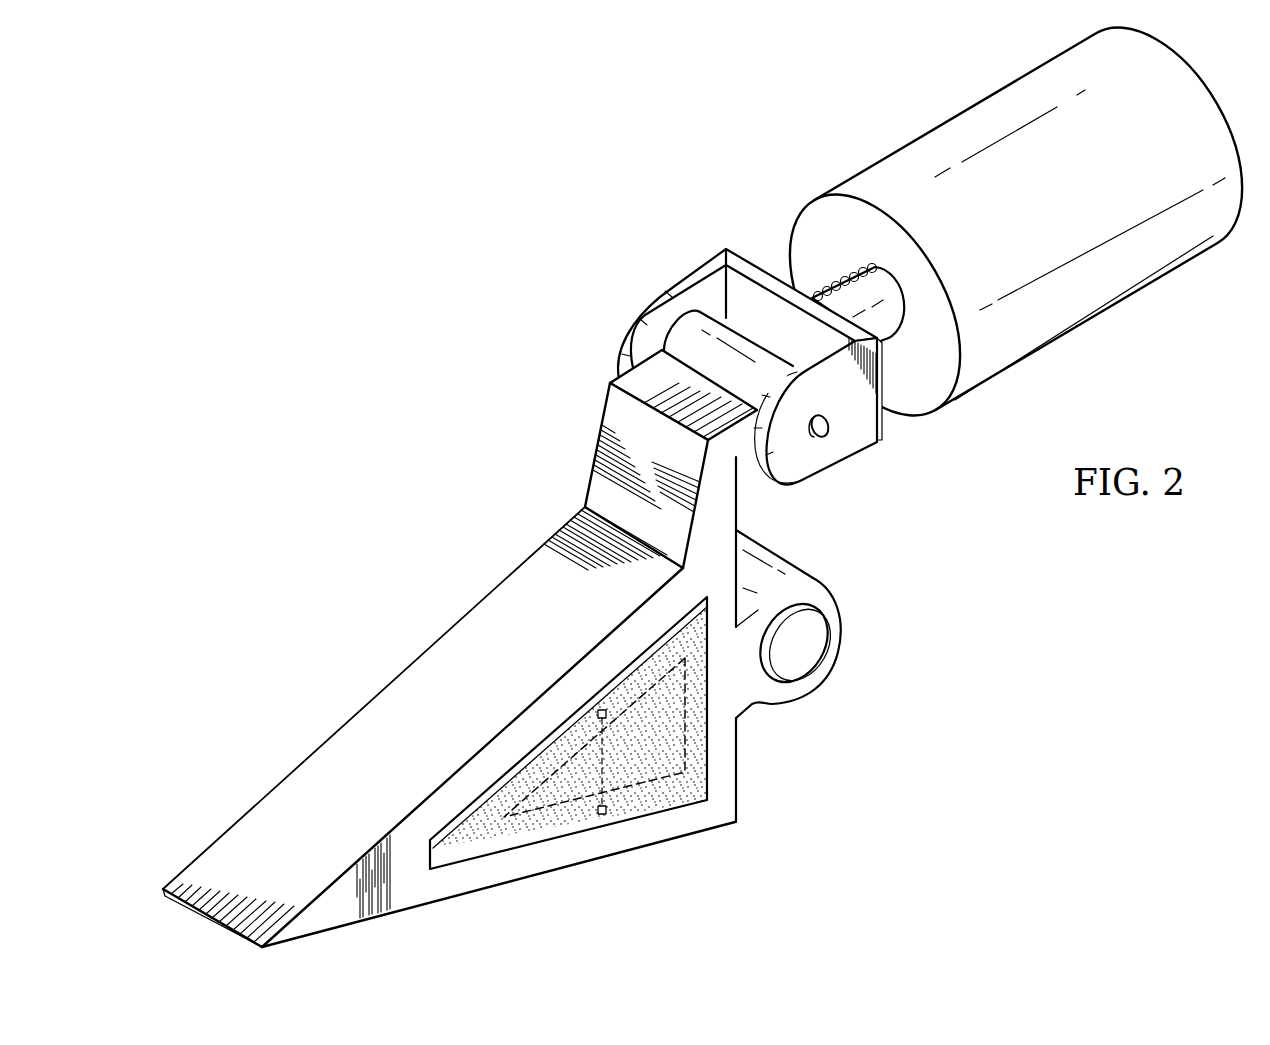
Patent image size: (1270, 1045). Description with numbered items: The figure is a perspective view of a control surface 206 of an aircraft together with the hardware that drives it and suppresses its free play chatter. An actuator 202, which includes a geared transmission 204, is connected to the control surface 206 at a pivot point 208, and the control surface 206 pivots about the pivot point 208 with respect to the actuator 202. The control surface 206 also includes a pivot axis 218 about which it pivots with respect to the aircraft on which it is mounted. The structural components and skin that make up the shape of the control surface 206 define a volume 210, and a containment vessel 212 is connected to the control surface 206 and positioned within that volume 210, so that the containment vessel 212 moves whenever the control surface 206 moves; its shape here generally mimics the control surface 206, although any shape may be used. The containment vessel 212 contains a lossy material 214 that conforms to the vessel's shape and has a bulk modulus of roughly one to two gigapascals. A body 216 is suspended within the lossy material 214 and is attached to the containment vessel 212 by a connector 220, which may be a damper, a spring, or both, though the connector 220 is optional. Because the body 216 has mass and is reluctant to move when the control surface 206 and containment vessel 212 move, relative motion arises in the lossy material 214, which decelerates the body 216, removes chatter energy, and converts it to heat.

The actuator 202 is at (950, 122).
The geared transmission 204 is at (826, 286).
The control surface 206 is at (396, 688).
The pivot point 208 is at (826, 432).
The volume 210 is at (500, 884).
The containment vessel 212 is at (708, 740).
The lossy material 214 is at (548, 832).
The body 216 is at (658, 764).
The pivot axis 218 is at (807, 653).
The connector 220 is at (610, 716).